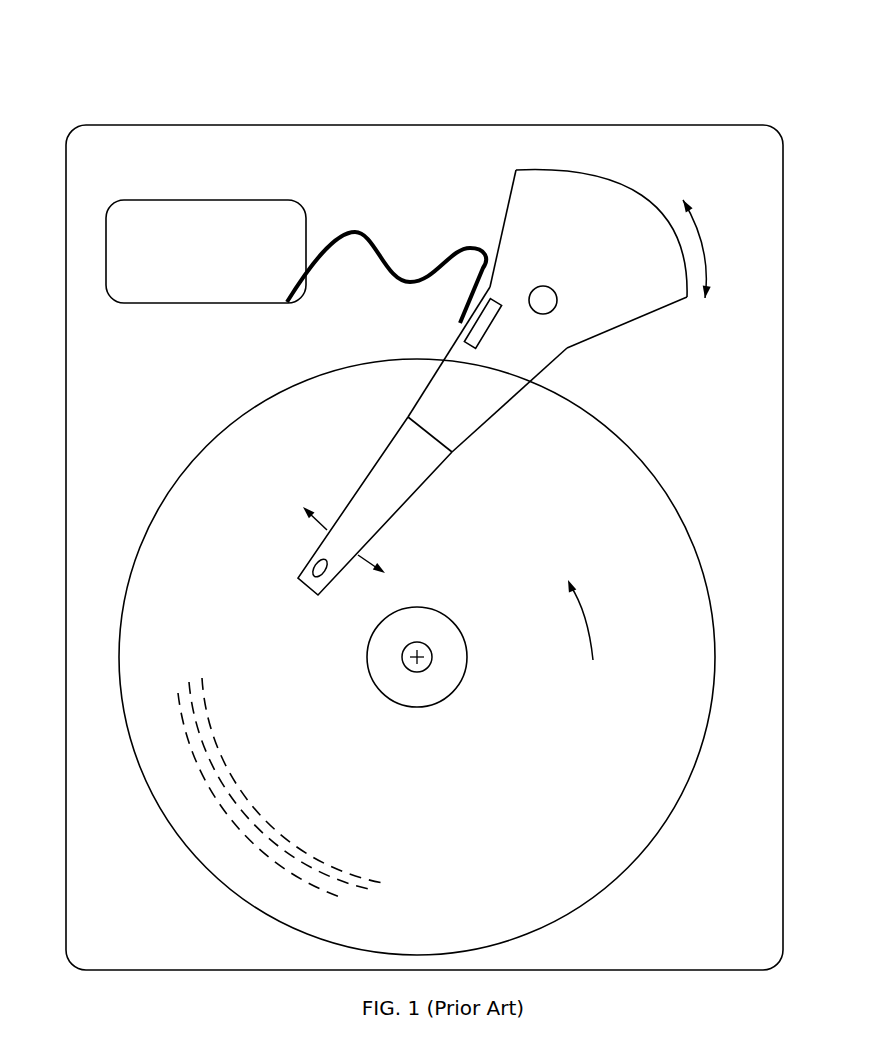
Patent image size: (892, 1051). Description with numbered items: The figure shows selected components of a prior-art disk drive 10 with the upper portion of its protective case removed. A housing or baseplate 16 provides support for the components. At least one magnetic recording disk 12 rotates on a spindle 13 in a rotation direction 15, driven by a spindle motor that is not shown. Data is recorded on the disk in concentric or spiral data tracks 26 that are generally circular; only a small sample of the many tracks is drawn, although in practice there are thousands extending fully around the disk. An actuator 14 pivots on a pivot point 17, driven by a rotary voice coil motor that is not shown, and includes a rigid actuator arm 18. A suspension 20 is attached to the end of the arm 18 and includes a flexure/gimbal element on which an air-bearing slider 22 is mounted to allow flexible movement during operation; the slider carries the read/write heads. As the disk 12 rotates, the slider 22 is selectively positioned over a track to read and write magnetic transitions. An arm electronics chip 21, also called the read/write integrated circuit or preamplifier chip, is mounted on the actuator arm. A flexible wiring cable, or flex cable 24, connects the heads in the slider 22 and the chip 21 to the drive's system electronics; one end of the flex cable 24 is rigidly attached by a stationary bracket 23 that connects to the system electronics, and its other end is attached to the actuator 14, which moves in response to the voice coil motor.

The disk drive 10 is at (231, 104).
The magnetic recording disk 12 is at (637, 457).
The spindle 13 is at (432, 659).
The actuator 14 is at (638, 197).
The direction 15 is at (593, 627).
The baseplate 16 is at (652, 127).
The pivot point 17 is at (543, 290).
The actuator arm 18 is at (495, 405).
The suspension 20 is at (368, 487).
The arm electronics chip 21 is at (492, 328).
The slider 22 is at (307, 587).
The bracket 23 is at (197, 207).
The flex cable 24 is at (433, 267).
The data tracks 26 is at (380, 886).